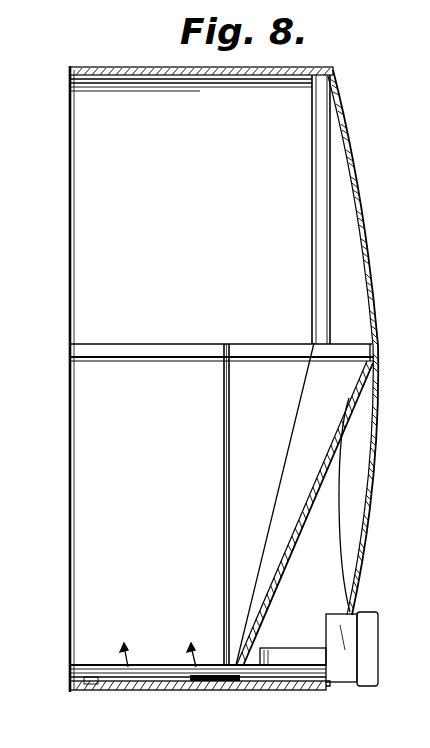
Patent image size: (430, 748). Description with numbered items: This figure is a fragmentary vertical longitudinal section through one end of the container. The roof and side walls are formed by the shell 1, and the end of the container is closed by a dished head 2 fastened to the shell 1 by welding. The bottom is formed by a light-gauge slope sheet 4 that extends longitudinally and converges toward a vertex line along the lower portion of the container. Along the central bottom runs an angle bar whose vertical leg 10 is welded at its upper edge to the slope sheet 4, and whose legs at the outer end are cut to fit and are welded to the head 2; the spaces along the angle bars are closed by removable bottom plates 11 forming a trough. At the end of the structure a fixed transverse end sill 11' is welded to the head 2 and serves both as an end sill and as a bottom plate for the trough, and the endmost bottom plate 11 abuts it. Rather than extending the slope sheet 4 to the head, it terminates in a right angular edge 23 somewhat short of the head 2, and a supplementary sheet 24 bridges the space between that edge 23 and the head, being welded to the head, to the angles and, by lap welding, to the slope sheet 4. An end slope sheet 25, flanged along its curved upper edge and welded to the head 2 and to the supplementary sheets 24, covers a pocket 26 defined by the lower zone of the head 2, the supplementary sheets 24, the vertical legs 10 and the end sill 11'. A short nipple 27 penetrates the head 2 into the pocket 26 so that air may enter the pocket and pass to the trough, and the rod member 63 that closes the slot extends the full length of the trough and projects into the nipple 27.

The shell 1 is at (316, 67).
The dished head 2 is at (378, 332).
The slope sheet 4 is at (88, 374).
The vertical leg of angle bar 10 is at (288, 660).
The bottom plate 11 is at (198, 690).
The end sill 11' is at (306, 698).
The right angular edge 23 is at (226, 380).
The supplementary sheet 24 is at (270, 378).
The end slope sheet 25 is at (281, 520).
The pocket 26 is at (351, 516).
The nipple 27 is at (360, 606).
The rod member 63 is at (164, 675).